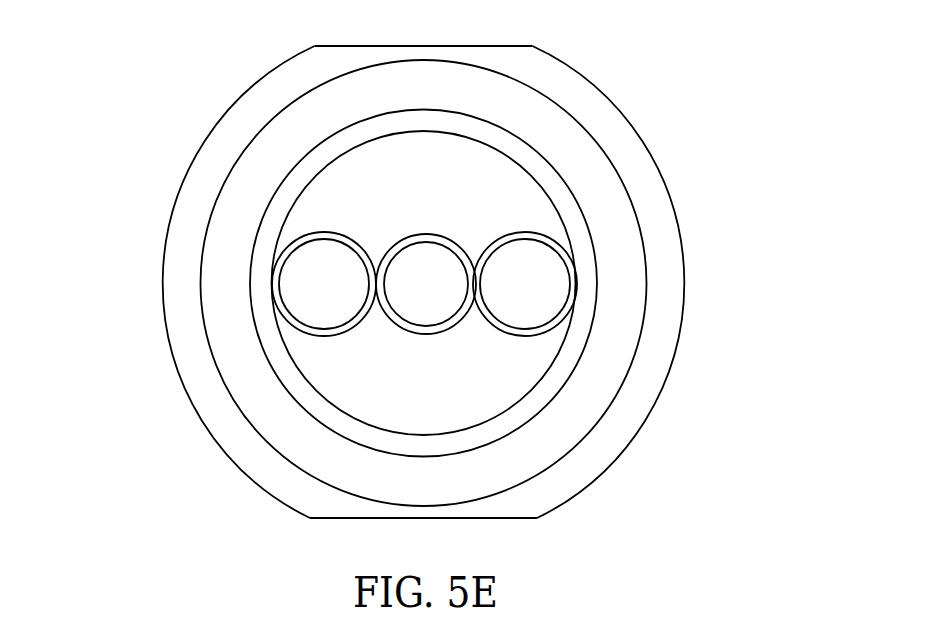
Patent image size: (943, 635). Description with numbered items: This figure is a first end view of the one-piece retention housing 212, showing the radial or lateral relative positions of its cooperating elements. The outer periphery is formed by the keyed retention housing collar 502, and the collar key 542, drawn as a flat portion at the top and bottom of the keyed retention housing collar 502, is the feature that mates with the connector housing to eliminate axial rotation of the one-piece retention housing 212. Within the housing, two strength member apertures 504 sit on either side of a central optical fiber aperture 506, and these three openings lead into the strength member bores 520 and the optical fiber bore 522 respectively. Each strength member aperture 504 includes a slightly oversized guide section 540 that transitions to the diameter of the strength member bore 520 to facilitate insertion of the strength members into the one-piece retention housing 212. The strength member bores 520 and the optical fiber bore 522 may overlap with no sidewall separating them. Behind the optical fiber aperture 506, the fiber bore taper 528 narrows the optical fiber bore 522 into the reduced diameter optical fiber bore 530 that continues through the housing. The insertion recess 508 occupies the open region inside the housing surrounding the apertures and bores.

The one-piece retention housing 212 is at (675, 135).
The keyed retention housing collar 502 is at (288, 88).
The strength member apertures 504 is at (322, 337).
The optical fiber aperture 506 is at (450, 323).
The insertion recess 508 is at (371, 377).
The strength member bores 520 is at (322, 283).
The optical fiber bore 522 is at (430, 273).
The fiber bore taper 528 is at (432, 327).
The reduced diameter optical fiber bore 530 is at (407, 321).
The guide section 540 is at (330, 222).
The collar key 542 is at (350, 45).